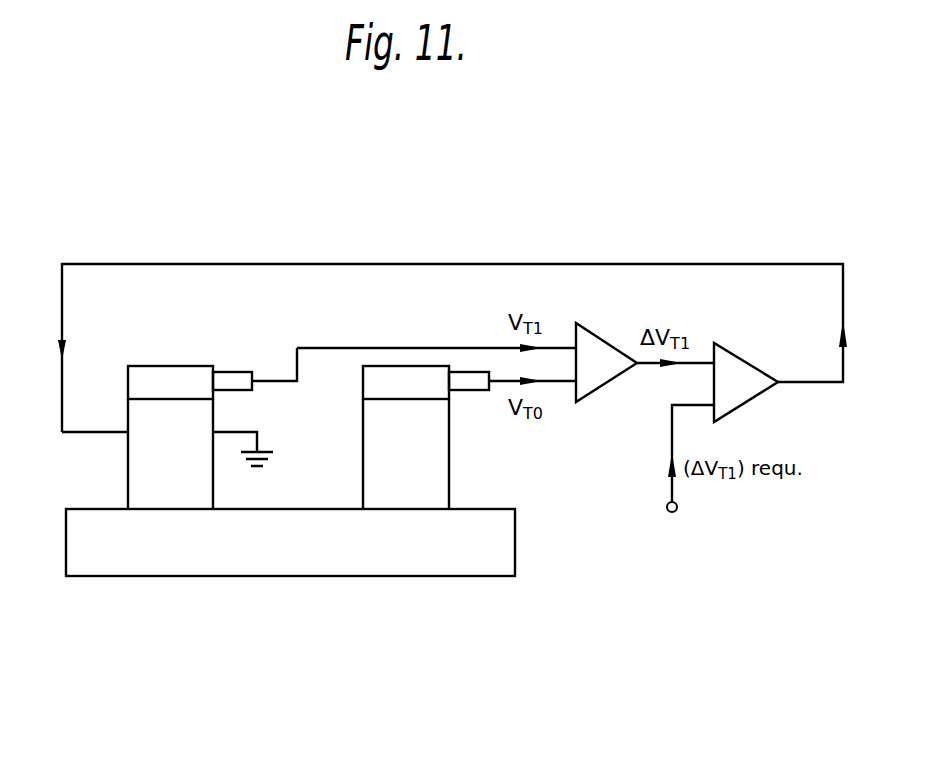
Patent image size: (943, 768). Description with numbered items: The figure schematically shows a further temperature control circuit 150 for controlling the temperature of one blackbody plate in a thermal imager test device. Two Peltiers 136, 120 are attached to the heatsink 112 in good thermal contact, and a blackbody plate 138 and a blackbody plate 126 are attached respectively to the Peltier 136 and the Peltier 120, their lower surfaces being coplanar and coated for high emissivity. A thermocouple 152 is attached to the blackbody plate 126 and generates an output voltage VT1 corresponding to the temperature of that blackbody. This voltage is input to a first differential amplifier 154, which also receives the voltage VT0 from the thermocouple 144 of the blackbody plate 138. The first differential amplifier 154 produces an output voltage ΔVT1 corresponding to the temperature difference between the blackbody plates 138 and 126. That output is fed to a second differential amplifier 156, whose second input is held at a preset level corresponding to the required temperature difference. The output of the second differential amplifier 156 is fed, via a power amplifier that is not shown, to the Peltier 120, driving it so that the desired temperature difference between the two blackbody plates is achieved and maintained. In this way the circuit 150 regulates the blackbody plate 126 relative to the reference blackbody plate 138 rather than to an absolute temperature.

The temperature control circuit 150 is at (104, 208).
The Peltier 120 is at (137, 456).
The blackbody plate 126 is at (152, 375).
The thermocouple 152 is at (237, 375).
The Peltier 136 is at (382, 457).
The blackbody plate 138 is at (375, 378).
The thermocouple 144 is at (478, 385).
The heatsink 112 is at (114, 565).
The first differential amplifier 154 is at (600, 340).
The second differential amplifier 156 is at (745, 355).